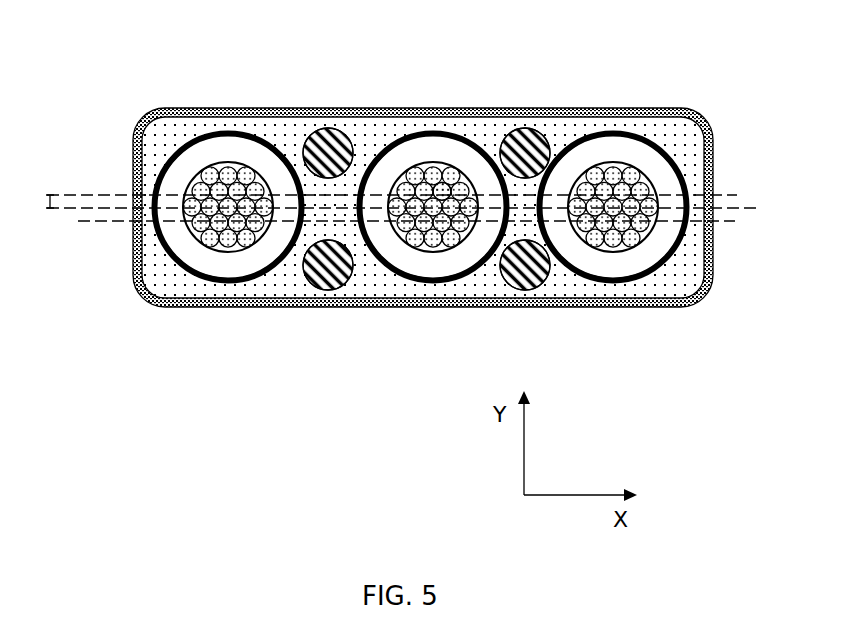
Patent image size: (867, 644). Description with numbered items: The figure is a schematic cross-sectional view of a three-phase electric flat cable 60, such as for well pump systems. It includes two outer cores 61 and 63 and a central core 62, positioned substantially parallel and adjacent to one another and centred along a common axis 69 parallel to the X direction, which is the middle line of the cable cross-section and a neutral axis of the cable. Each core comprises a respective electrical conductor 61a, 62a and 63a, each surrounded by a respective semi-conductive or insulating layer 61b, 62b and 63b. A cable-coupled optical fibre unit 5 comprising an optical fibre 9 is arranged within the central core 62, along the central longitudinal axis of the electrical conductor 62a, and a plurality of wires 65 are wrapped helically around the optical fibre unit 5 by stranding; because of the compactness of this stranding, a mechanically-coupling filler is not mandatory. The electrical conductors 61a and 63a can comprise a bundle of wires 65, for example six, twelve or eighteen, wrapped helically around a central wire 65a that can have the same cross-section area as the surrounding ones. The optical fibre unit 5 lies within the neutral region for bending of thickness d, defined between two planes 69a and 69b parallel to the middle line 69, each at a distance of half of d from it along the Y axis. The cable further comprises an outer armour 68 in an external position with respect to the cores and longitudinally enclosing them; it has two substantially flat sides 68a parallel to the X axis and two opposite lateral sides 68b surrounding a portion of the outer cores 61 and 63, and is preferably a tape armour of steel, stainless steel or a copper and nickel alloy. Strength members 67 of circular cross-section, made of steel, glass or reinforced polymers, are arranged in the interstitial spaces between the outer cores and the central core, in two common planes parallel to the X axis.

The three-phase electric flat cable 60 is at (239, 76).
The outer core 61 is at (178, 217).
The electrical conductor 61a is at (200, 238).
The semi-conductive or insulating layer 61b is at (172, 173).
The central core 62 is at (432, 243).
The electrical conductor 62a is at (415, 253).
The semi-conductive or insulating layer 62b is at (443, 267).
The outer core 63 is at (618, 228).
The electrical conductor 63a is at (627, 253).
The semi-conductive or insulating layer 63b is at (600, 272).
The wires 65 is at (228, 258).
The central wire 65a is at (227, 163).
The strength members 67 is at (322, 145).
The outer armour 68 is at (380, 249).
The flat sides 68a is at (365, 305).
The lateral sides 68b is at (130, 135).
The common axis 69 is at (408, 191).
The plane 69a is at (737, 195).
The plane 69b is at (735, 222).
The optical fibre 9 is at (436, 205).
The cable-coupled optical fibre unit 5 is at (450, 185).